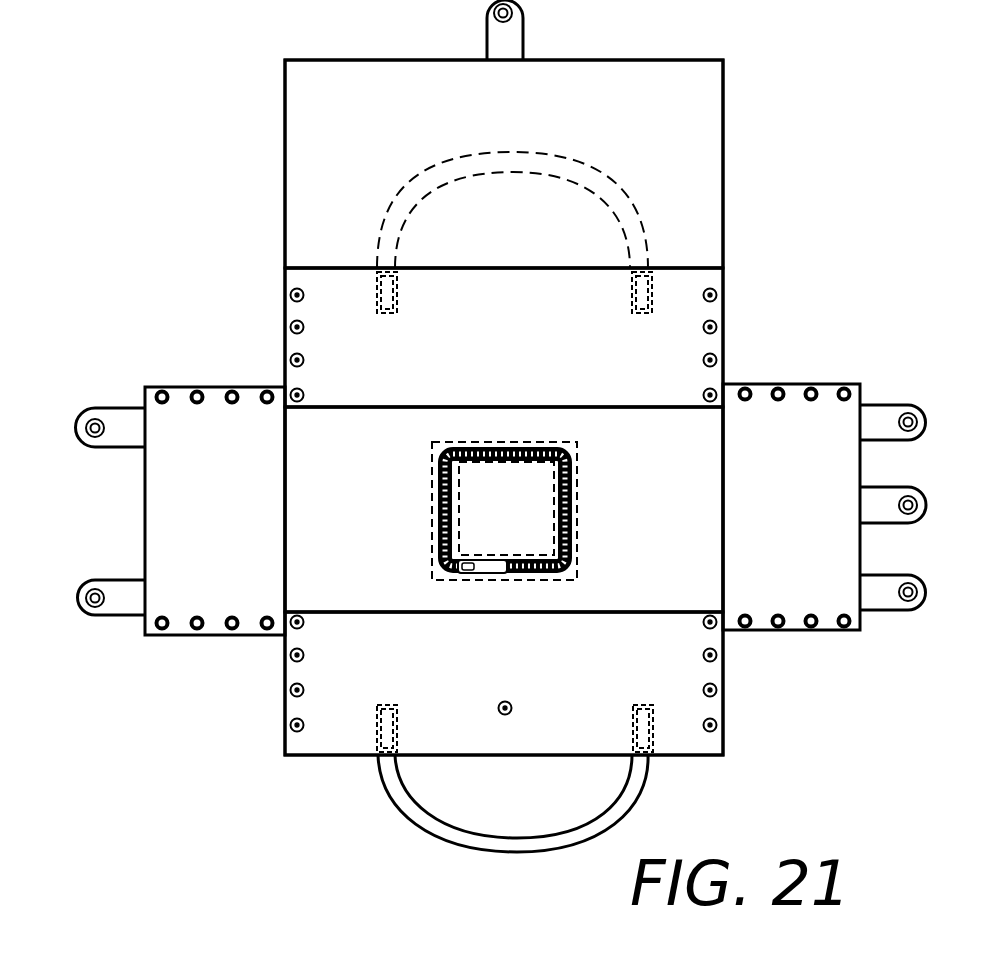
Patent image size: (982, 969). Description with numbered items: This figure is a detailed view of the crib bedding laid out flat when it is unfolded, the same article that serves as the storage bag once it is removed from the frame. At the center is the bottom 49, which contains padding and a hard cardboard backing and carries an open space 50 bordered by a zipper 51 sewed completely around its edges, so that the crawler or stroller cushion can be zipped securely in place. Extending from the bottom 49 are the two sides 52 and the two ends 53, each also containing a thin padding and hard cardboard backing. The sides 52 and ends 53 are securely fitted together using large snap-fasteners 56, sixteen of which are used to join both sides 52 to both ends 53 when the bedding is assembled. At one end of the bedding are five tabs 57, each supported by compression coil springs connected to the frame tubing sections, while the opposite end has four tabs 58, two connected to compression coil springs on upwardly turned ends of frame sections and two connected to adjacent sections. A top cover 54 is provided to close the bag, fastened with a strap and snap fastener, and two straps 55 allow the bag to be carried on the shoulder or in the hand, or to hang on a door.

The bottom 49 is at (504, 509).
The open space 50 is at (504, 511).
The zipper 51 is at (483, 573).
The sides 52 is at (504, 511).
The ends 53 is at (502, 509).
The top cover 54 is at (504, 134).
The straps 55 is at (560, 173).
The snap-fasteners 56 is at (512, 14).
The tabs 57 is at (921, 404).
The tabs 58 is at (104, 407).